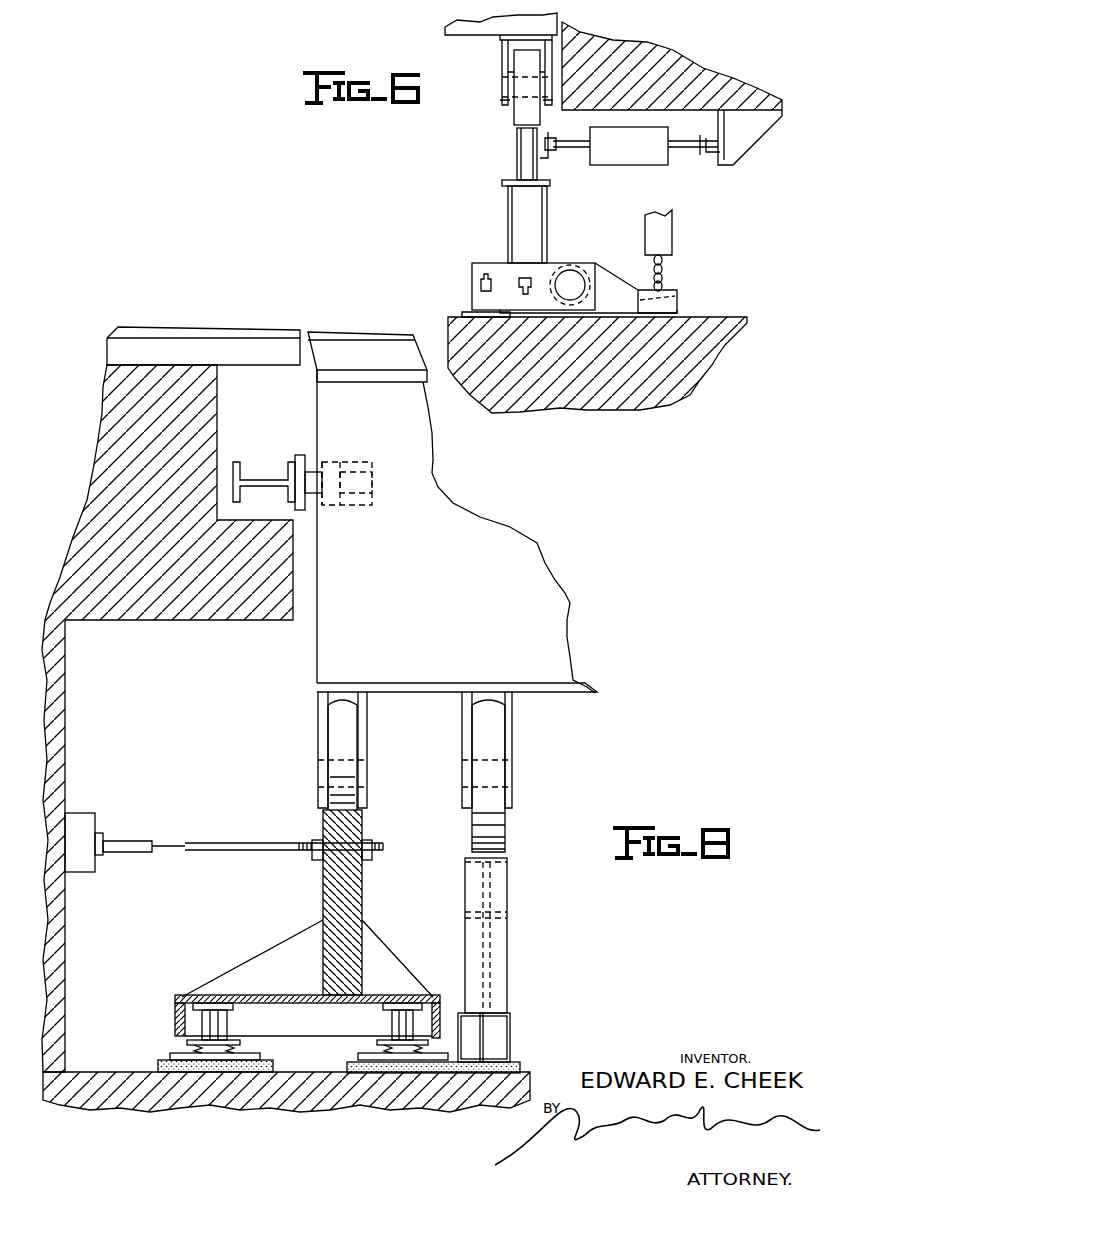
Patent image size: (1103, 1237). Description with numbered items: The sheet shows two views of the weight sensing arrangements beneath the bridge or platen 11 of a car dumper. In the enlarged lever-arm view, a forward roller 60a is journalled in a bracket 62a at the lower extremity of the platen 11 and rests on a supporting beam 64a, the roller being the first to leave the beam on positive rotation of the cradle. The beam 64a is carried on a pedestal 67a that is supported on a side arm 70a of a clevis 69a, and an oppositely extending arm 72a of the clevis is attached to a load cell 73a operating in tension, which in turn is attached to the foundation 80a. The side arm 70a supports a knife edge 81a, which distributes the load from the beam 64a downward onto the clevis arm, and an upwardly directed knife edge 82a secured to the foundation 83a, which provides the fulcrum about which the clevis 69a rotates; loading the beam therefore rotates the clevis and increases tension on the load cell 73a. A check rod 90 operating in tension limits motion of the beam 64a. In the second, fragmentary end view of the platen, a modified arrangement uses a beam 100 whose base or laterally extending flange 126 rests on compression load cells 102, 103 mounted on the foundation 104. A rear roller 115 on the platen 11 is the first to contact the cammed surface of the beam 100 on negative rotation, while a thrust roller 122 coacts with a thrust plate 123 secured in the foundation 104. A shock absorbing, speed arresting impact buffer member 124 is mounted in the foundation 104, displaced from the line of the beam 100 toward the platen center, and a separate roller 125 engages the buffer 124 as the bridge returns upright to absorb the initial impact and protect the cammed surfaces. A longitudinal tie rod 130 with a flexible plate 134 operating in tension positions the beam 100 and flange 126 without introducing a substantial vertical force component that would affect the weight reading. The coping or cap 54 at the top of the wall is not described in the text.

In FIG. 6, the bracket 62a is at (502, 65).
In FIG. 6, the forward roller 60a is at (514, 125).
In FIG. 6, the supporting beam 64a is at (518, 148).
In FIG. 6, the pedestal 67a is at (543, 218).
In FIG. 6, the clevis 69a is at (572, 270).
In FIG. 6, the side arm of clevis 70a is at (478, 268).
In FIG. 6, the arm 72a is at (609, 287).
In FIG. 6, the load cell 73a is at (663, 247).
In FIG. 6, the foundation 80a is at (707, 70).
In FIG. 6, the knife edge 81a is at (525, 272).
In FIG. 6, the knife edge 82a is at (477, 287).
In FIG. 6, the foundation 83a is at (657, 390).
In FIG. 6, the check rod 90 is at (657, 165).
In FIG. 8, the coping cap 54 is at (372, 342).
In FIG. 8, the foundation 104 is at (110, 467).
In FIG. 8, the thrust plate 123 is at (300, 470).
In FIG. 8, the thrust roller 122 is at (310, 497).
In FIG. 8, the platen 11 is at (441, 510).
In FIG. 8, the rear roller 115 is at (347, 745).
In FIG. 8, the separate roller 125 is at (490, 752).
In FIG. 8, the beam 100 is at (350, 903).
In FIG. 8, the longitudinal tie rod 130 is at (223, 843).
In FIG. 8, the flexible plate 134 is at (165, 850).
In FIG. 8, the impact buffer member 124 is at (500, 948).
In FIG. 8, the flange of beam 126 is at (247, 995).
In FIG. 8, the load cell 102 is at (220, 1027).
In FIG. 8, the load cell 103 is at (393, 1022).